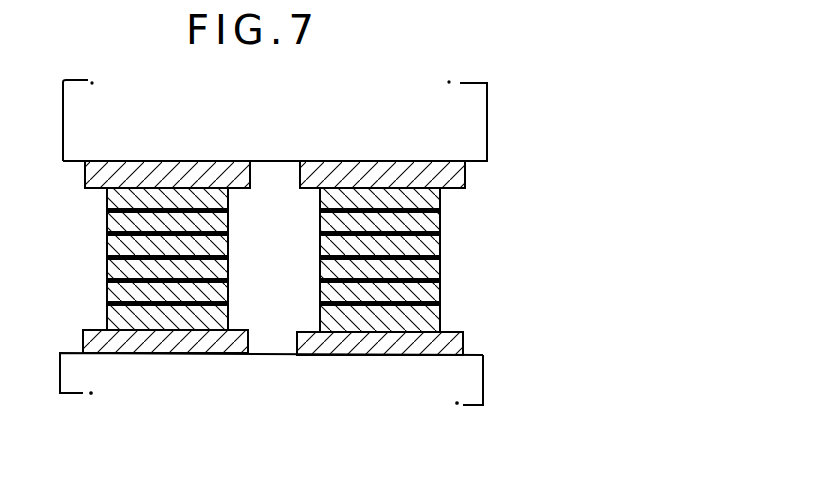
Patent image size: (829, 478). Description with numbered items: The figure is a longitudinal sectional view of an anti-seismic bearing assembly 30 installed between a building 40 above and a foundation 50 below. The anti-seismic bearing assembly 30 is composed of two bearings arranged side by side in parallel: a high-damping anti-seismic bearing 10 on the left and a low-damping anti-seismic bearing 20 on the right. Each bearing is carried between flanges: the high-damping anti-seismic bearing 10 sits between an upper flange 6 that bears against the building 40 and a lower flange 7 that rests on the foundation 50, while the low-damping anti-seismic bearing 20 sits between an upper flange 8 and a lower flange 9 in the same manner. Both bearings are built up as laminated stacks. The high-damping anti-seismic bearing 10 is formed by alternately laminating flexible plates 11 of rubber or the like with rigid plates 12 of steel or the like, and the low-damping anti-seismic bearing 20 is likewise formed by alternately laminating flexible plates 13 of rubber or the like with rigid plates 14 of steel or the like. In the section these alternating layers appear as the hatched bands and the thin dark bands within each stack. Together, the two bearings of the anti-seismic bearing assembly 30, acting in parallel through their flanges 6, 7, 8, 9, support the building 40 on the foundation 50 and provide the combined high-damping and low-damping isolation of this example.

The building 40 is at (487, 128).
The foundation 50 is at (84, 378).
The flange 6 is at (250, 182).
The flange 8 is at (466, 182).
The flange 7 is at (248, 346).
The flange 9 is at (465, 346).
The high-damping anti-seismic bearing 10 is at (170, 259).
The flexible plate 11 is at (228, 205).
The rigid plate 12 is at (228, 240).
The anti-seismic bearing assembly 30 is at (422, 260).
The flexible plate 13 is at (440, 205).
The rigid plate 14 is at (440, 240).
The low-damping anti-seismic bearing 20 is at (455, 296).